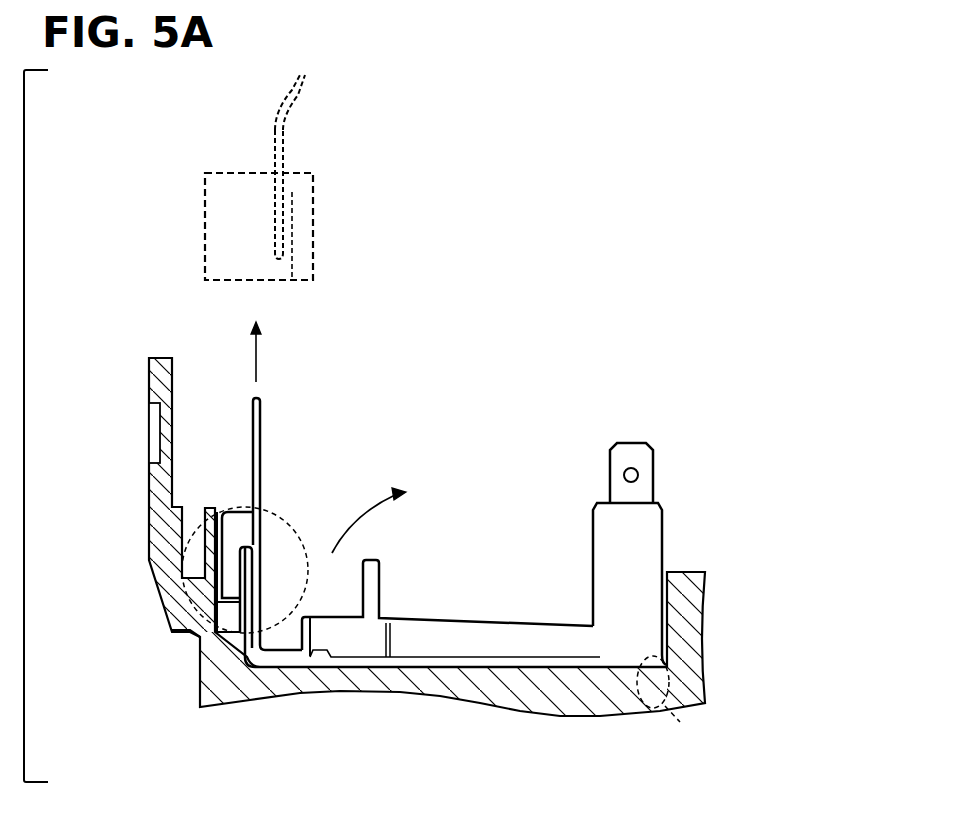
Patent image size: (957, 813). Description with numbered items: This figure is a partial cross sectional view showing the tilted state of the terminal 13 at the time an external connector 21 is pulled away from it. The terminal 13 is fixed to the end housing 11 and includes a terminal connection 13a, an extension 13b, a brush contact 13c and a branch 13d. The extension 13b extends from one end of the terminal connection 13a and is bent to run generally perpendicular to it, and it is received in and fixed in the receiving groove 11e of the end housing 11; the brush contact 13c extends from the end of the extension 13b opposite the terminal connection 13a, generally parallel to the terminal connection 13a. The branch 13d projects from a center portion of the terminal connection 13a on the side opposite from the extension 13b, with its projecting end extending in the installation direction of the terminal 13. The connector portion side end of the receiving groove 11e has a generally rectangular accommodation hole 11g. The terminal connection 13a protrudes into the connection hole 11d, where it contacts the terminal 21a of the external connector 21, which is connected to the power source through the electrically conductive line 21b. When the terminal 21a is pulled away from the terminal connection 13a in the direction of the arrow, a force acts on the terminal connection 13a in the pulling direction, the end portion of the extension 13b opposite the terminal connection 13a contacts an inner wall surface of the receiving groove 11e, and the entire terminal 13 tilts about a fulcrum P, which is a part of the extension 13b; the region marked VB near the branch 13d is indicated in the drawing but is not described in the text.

The end housing 11 is at (212, 722).
The connection hole 11d is at (173, 463).
The receiving groove 11e is at (655, 666).
The accommodation hole 11g is at (200, 630).
The terminal 13 is at (370, 494).
The terminal connection 13a is at (260, 458).
The extension 13b is at (433, 630).
The brush contact 13c is at (621, 452).
The branch 13d is at (230, 557).
The external connector 21 is at (326, 177).
The terminal of external connector 21a is at (275, 207).
The electrically conductive line 21b is at (297, 112).
The fulcrum P is at (663, 706).
The rotation region VB is at (280, 518).